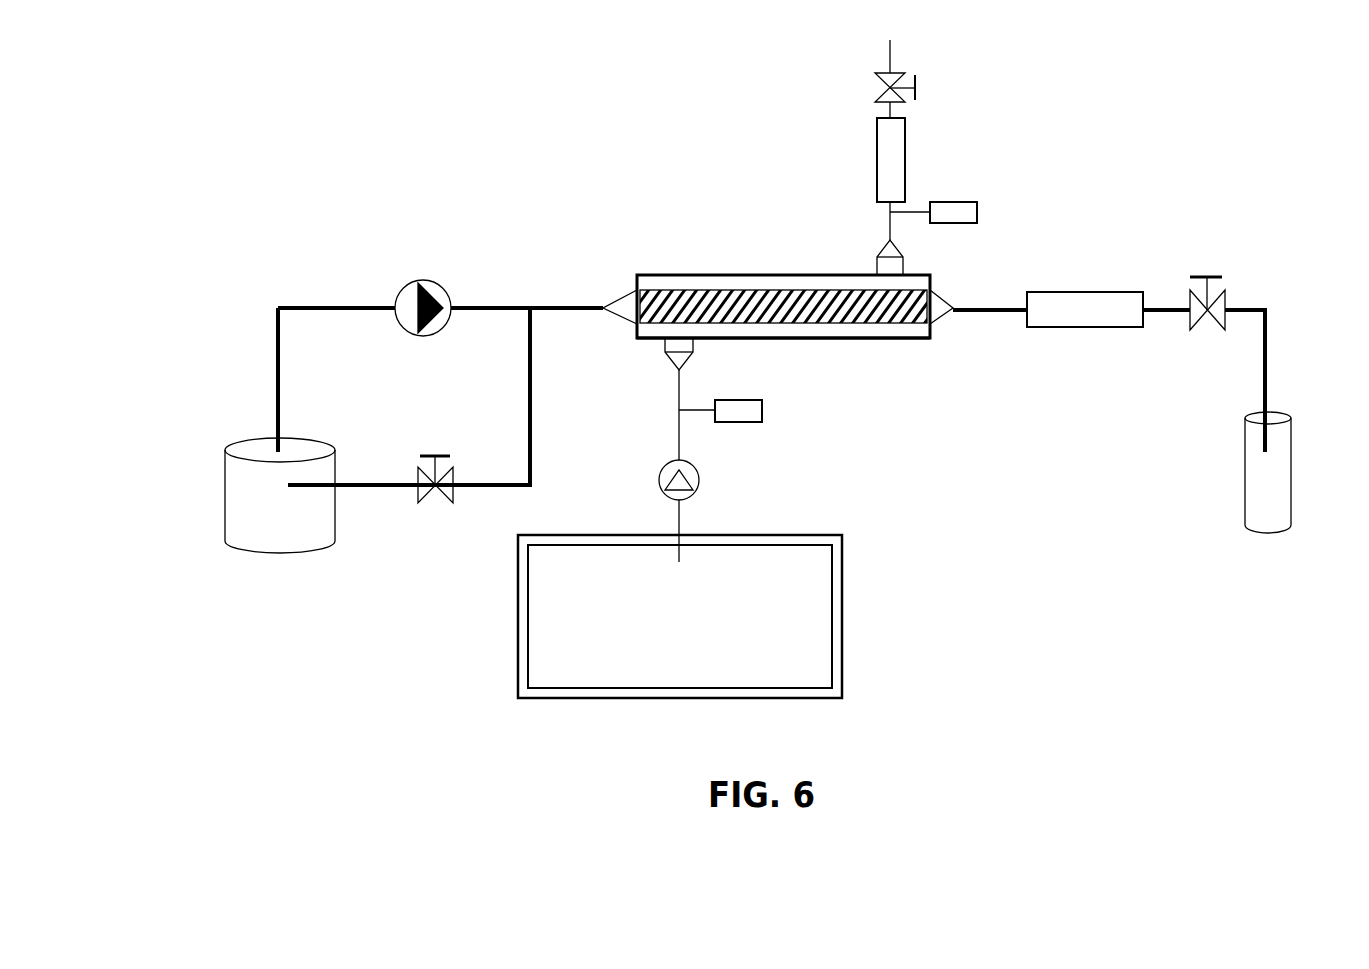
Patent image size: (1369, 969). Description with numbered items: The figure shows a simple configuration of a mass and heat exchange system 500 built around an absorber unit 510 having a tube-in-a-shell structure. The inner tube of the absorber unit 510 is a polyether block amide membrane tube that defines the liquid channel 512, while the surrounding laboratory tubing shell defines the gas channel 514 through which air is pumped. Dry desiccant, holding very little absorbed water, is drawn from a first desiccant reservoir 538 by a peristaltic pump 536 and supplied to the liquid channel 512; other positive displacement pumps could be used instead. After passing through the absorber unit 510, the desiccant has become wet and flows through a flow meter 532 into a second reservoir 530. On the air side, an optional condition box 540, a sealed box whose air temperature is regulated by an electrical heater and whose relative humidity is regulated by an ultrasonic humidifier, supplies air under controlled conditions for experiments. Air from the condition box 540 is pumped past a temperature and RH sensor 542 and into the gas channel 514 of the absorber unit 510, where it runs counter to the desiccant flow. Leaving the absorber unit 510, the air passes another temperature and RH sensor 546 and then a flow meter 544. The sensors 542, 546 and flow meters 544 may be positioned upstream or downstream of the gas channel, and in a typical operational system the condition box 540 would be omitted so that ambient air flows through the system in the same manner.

The mass and heat exchange system 500 is at (331, 121).
The absorber unit 510 is at (667, 273).
The liquid channel 512 is at (765, 306).
The gas channel 514 is at (877, 331).
The second reservoir 530 is at (1269, 543).
The flow meter 532 is at (1132, 290).
The peristaltic pump 536 is at (411, 281).
The first desiccant reservoir 538 is at (286, 557).
The condition box 540 is at (849, 604).
The temperature and RH sensor 542 is at (773, 412).
The flow meter 544 is at (909, 130).
The temperature and RH sensor 546 is at (967, 196).